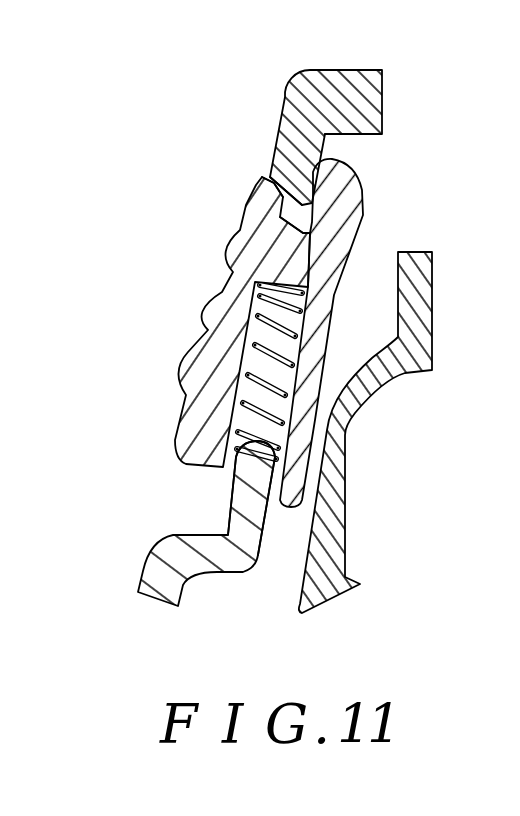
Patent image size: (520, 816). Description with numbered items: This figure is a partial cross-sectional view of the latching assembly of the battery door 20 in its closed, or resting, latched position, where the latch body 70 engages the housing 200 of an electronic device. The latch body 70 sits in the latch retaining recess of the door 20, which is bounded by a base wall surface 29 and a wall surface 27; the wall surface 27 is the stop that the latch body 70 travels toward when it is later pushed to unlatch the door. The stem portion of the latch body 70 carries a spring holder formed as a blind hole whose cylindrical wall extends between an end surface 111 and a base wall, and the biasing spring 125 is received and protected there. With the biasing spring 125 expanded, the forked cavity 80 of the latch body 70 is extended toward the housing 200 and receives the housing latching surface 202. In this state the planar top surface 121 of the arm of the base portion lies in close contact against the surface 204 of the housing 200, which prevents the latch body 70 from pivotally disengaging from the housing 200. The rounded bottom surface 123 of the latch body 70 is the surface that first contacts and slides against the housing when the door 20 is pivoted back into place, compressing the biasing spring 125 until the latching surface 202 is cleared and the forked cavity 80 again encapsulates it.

The battery door 20 is at (418, 288).
The wall surface 27 is at (170, 533).
The base wall surface 29 is at (226, 495).
The latch body 70 is at (258, 255).
The forked cavity 80 is at (297, 214).
The end surface 111 is at (265, 397).
The planar top surface 121 is at (307, 186).
The rounded bottom surface 123 is at (365, 220).
The biasing spring 125 is at (252, 345).
The housing 200 is at (345, 85).
The housing latching surface 202 is at (283, 196).
The housing surface 204 is at (332, 153).